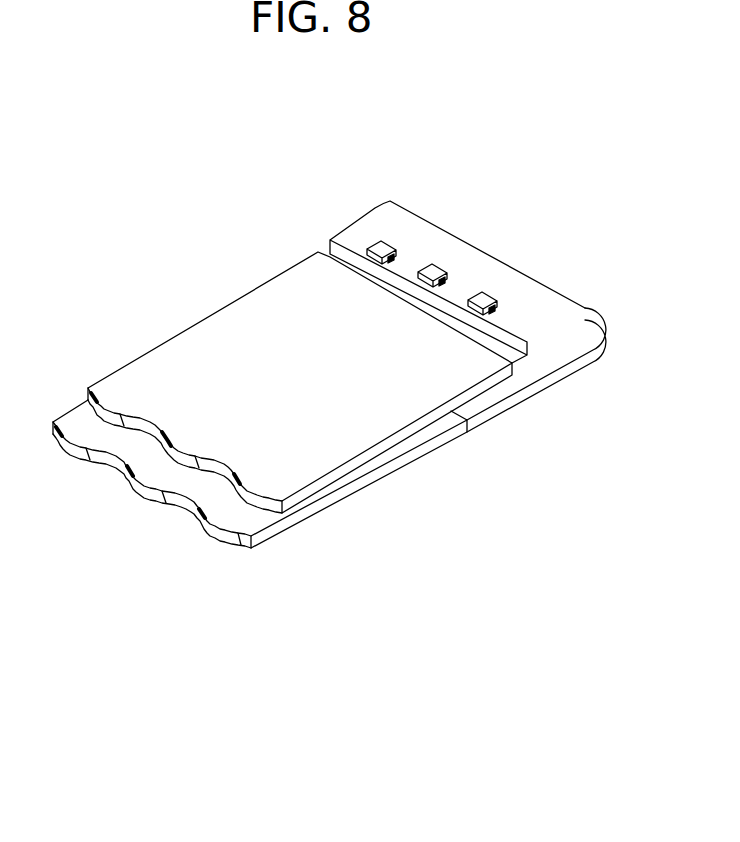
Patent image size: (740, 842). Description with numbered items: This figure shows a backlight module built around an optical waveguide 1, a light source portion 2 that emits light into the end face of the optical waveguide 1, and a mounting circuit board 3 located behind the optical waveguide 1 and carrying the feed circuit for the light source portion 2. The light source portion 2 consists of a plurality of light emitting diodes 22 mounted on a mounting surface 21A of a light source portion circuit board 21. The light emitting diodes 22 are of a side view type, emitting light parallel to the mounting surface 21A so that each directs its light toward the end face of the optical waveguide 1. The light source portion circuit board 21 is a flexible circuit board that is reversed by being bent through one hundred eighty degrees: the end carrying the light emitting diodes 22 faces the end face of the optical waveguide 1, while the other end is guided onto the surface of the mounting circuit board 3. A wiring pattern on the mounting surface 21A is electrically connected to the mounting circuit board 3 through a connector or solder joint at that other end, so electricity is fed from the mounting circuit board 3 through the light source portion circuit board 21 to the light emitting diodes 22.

The optical waveguide 1 is at (221, 330).
The light source portion 2 is at (468, 262).
The light source portion circuit board 21 is at (430, 238).
The mounting surface 21A is at (490, 270).
The light emitting diodes 22 is at (381, 244).
The mounting circuit board 3 is at (382, 460).